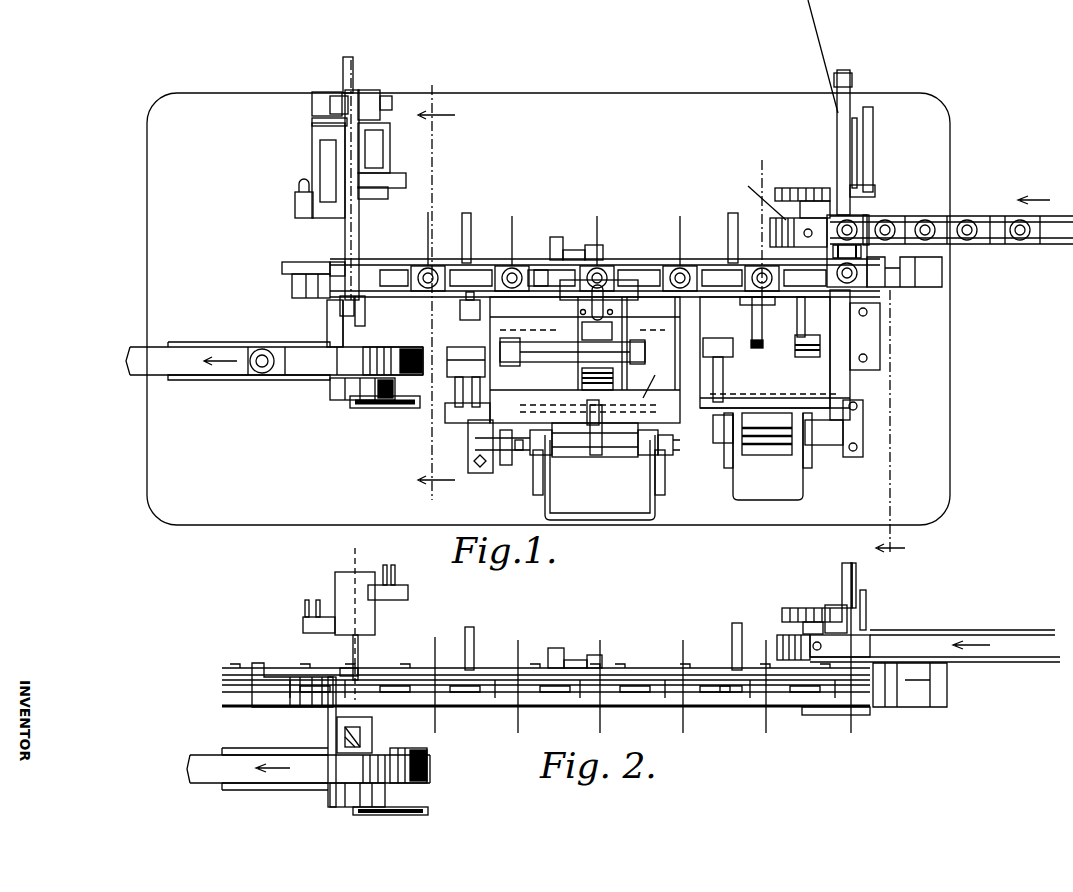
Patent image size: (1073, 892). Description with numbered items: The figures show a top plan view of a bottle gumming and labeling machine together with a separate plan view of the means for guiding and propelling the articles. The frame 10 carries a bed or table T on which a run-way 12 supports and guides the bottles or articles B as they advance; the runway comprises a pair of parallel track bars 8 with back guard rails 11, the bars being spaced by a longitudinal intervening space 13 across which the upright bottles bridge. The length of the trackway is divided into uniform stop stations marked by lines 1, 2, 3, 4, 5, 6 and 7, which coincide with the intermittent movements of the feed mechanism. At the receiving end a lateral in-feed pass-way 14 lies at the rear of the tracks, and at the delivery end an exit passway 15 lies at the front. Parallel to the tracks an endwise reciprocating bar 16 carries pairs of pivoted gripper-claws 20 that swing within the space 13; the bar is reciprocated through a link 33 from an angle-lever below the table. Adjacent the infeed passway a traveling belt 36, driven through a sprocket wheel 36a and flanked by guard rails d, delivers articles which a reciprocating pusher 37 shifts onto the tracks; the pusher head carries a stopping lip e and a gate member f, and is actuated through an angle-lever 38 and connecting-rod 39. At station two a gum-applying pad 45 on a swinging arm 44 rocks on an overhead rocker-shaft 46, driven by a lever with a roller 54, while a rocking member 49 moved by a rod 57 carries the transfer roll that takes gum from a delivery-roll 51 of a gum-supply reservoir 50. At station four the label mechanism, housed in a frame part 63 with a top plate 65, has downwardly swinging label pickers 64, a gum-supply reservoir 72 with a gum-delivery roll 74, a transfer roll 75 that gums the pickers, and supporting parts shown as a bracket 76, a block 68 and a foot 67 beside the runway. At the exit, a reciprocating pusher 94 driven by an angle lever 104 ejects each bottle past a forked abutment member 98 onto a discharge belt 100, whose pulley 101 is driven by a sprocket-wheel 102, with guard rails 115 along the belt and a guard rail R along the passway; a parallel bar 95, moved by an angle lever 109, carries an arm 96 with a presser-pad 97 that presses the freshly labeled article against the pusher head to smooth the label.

In FIG. 2, the stop station line 1 is at (849, 644).
In FIG. 1, the stop station line 2 is at (762, 228).
In FIG. 2, the stop station line 2 is at (763, 676).
In FIG. 1, the stop station line 3 is at (680, 244).
In FIG. 2, the stop station line 3 is at (682, 675).
In FIG. 1, the stop station line 4 is at (597, 244).
In FIG. 2, the stop station line 4 is at (599, 677).
In FIG. 1, the stop station line 5 is at (512, 244).
In FIG. 2, the stop station line 5 is at (516, 675).
In FIG. 1, the stop station line 6 is at (428, 242).
In FIG. 2, the stop station line 6 is at (433, 675).
In FIG. 2, the stop station line 7 is at (355, 620).
In FIG. 1, the track bars 8 is at (655, 284).
In FIG. 2, the track bars 8 is at (385, 676).
In FIG. 1, the frame 10 is at (834, 280).
In FIG. 2, the back guard rails 11 is at (640, 676).
In FIG. 1, the run-way 12 is at (958, 277).
In FIG. 2, the run-way 12 is at (264, 694).
In FIG. 1, the intervening space 13 is at (545, 282).
In FIG. 2, the intervening space 13 is at (722, 700).
In FIG. 1, the in-feed pass-way 14 is at (855, 246).
In FIG. 1, the exit passway 15 is at (338, 322).
In FIG. 2, the exit passway 15 is at (345, 740).
In FIG. 2, the reciprocating bar 16 is at (228, 672).
In FIG. 1, the gripper-claws 20 is at (470, 272).
In FIG. 2, the gripper-claws 20 is at (490, 700).
In FIG. 1, the link 33 is at (576, 239).
In FIG. 2, the link 33 is at (575, 651).
In FIG. 1, the traveling belt 36 is at (1003, 270).
In FIG. 2, the traveling belt 36 is at (978, 640).
In FIG. 1, the sprocket wheel 36a is at (801, 191).
In FIG. 2, the sprocket wheel 36a is at (812, 609).
In FIG. 1, the pusher 37 is at (866, 160).
In FIG. 2, the pusher 37 is at (850, 598).
In FIG. 1, the angle-lever 38 is at (870, 157).
In FIG. 1, the connecting-rod 39 is at (872, 185).
In FIG. 1, the swinging arm 44 is at (758, 330).
In FIG. 1, the gum-applying pad 45 is at (765, 310).
In FIG. 1, the rocker-shaft 46 is at (775, 355).
In FIG. 1, the rocking member 49 is at (815, 402).
In FIG. 1, the gum-supply reservoir 50 is at (783, 456).
In FIG. 1, the delivery-roll 51 is at (767, 434).
In FIG. 1, the roller 54 is at (807, 347).
In FIG. 1, the rod 57 is at (713, 429).
In FIG. 1, the main frame 63 is at (585, 361).
In FIG. 1, the label pickers 64 is at (582, 350).
In FIG. 1, the top plate 65 is at (599, 300).
In FIG. 1, the foot 67 is at (470, 400).
In FIG. 1, the block 68 is at (467, 317).
In FIG. 1, the gum-supply reservoir 72 is at (599, 477).
In FIG. 1, the gum-delivery roll 74 is at (574, 439).
In FIG. 1, the transfer roll 75 is at (572, 357).
In FIG. 1, the bracket 76 is at (458, 377).
In FIG. 2, the reciprocating pusher 94 is at (355, 668).
In FIG. 1, the reciprocating bar 95 is at (350, 228).
In FIG. 1, the arm 96 is at (338, 302).
In FIG. 2, the arm 96 is at (362, 735).
In FIG. 1, the presser-pad 97 is at (352, 312).
In FIG. 2, the presser-pad 97 is at (345, 720).
In FIG. 1, the forked abutment member 98 is at (345, 402).
In FIG. 2, the forked abutment member 98 is at (345, 807).
In FIG. 1, the discharge belt 100 is at (274, 361).
In FIG. 2, the discharge belt 100 is at (308, 769).
In FIG. 1, the pulley 101 is at (382, 351).
In FIG. 2, the pulley 101 is at (420, 784).
In FIG. 1, the sprocket-wheel 102 is at (372, 409).
In FIG. 2, the sprocket-wheel 102 is at (405, 820).
In FIG. 1, the angle lever 104 is at (382, 135).
In FIG. 1, the angle lever 109 is at (320, 168).
In FIG. 1, the guard rails 115 is at (249, 370).
In FIG. 2, the guard rails 115 is at (270, 766).
In FIG. 1, the articles B is at (262, 375).
In FIG. 1, the table T is at (548, 309).
In FIG. 1, the guard rails d is at (951, 209).
In FIG. 2, the guard rails d is at (935, 646).
In FIG. 1, the flange or lip e is at (798, 232).
In FIG. 2, the flange or lip e is at (839, 646).
In FIG. 1, the gate member f is at (868, 222).
In FIG. 2, the gate member f is at (867, 610).
In FIG. 2, the rail end R is at (840, 719).